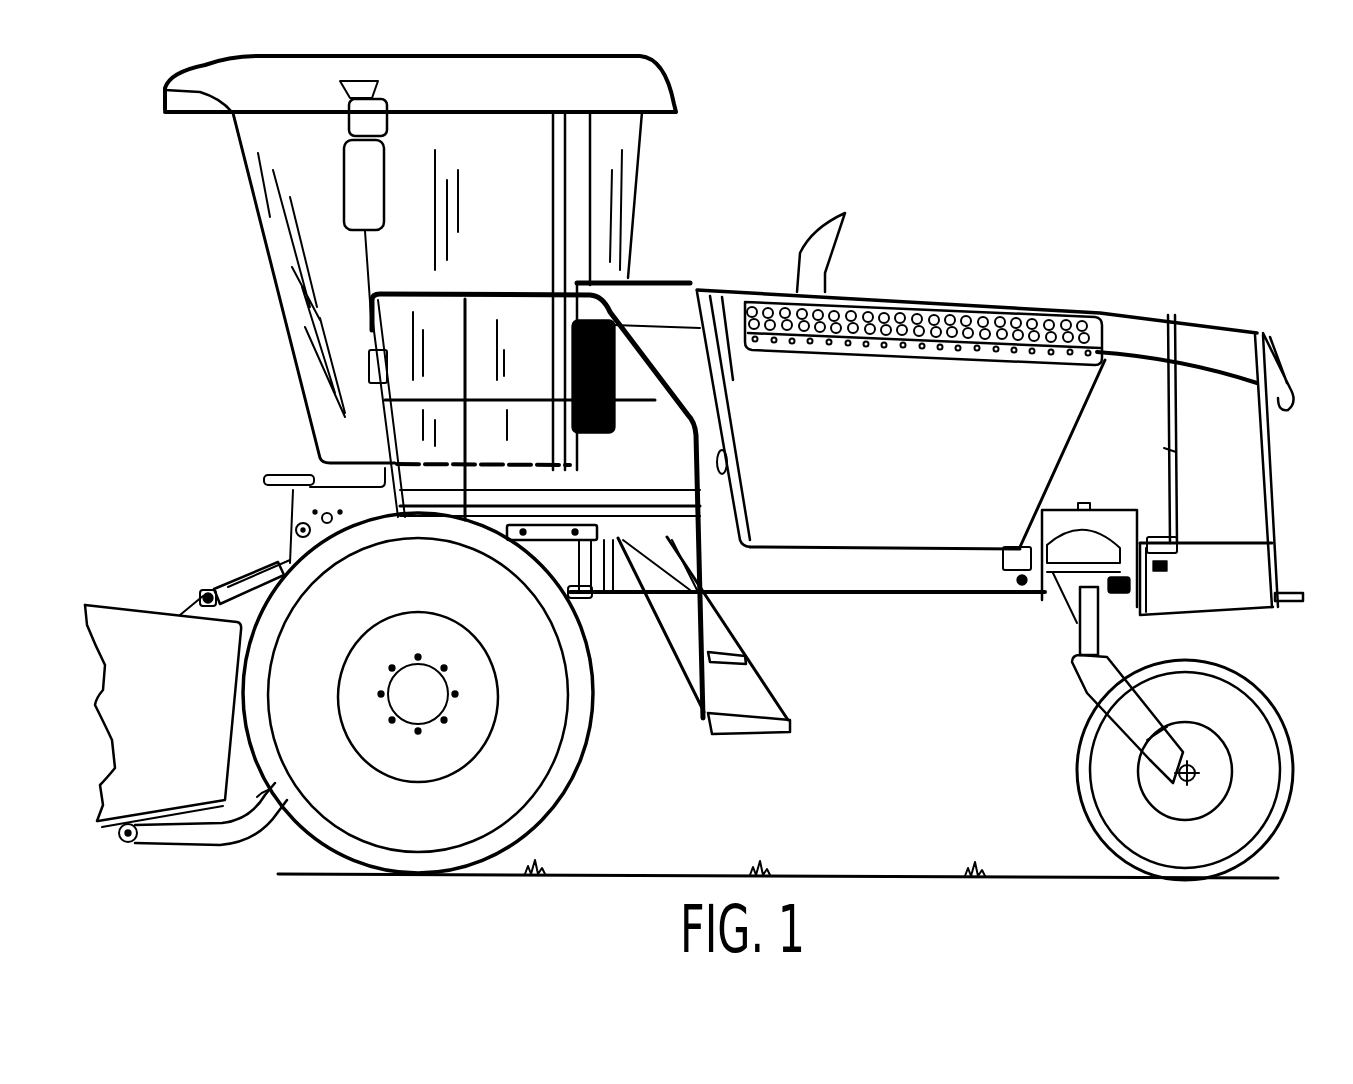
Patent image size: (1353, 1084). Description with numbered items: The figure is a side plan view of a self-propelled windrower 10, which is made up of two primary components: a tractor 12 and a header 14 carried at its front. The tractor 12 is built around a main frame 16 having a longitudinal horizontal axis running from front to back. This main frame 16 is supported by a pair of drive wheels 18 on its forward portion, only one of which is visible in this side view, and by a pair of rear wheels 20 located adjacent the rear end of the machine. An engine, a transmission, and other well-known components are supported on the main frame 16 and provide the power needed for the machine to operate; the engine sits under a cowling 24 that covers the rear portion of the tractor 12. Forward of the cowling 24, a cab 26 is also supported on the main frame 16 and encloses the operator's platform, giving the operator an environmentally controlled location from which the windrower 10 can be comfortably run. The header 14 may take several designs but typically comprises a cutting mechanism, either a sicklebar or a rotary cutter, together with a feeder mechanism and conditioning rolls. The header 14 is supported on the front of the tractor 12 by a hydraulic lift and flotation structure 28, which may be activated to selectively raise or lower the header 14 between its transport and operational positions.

The self-propelled windrower 10 is at (1052, 150).
The tractor 12 is at (996, 272).
The header 14 is at (152, 570).
The main frame 16 is at (903, 572).
The drive wheels 18 is at (587, 747).
The rear wheels 20 is at (1266, 713).
The cowling 24 is at (921, 453).
The cab 26 is at (617, 178).
The hydraulic lift and flotation structure 28 is at (263, 527).